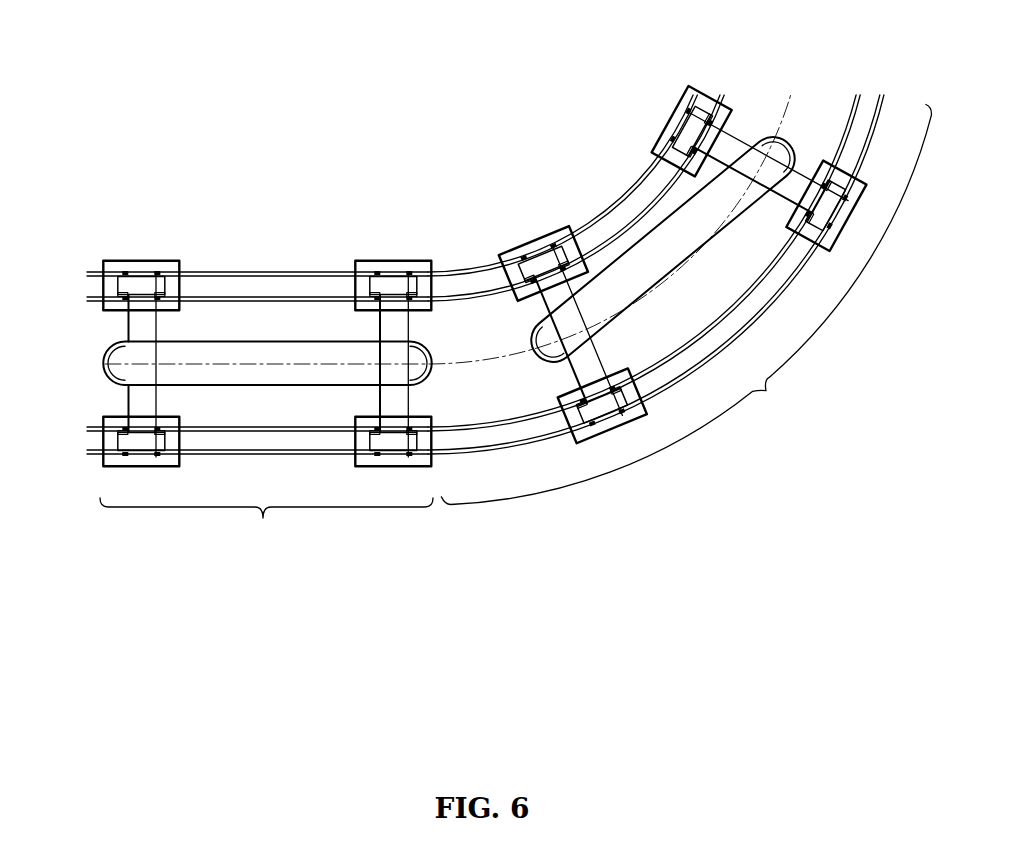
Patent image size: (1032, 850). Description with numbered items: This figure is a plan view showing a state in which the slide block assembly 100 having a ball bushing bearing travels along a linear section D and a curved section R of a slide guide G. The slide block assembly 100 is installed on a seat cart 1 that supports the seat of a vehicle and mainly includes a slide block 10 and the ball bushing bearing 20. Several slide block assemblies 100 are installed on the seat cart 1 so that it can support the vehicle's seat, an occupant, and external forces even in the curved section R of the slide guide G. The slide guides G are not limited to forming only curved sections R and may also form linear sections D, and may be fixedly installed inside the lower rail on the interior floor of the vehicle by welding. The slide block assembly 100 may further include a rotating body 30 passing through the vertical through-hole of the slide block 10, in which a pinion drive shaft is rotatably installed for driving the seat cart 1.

The seat cart 1 is at (183, 373).
The slide block 10 is at (141, 260).
The ball bushing bearing 20 is at (125, 270).
The rotating body 30 is at (137, 324).
The slide block assembly 100 is at (441, 383).
The slide guide G is at (318, 452).
The linear section D is at (266, 527).
The curved section R is at (686, 305).